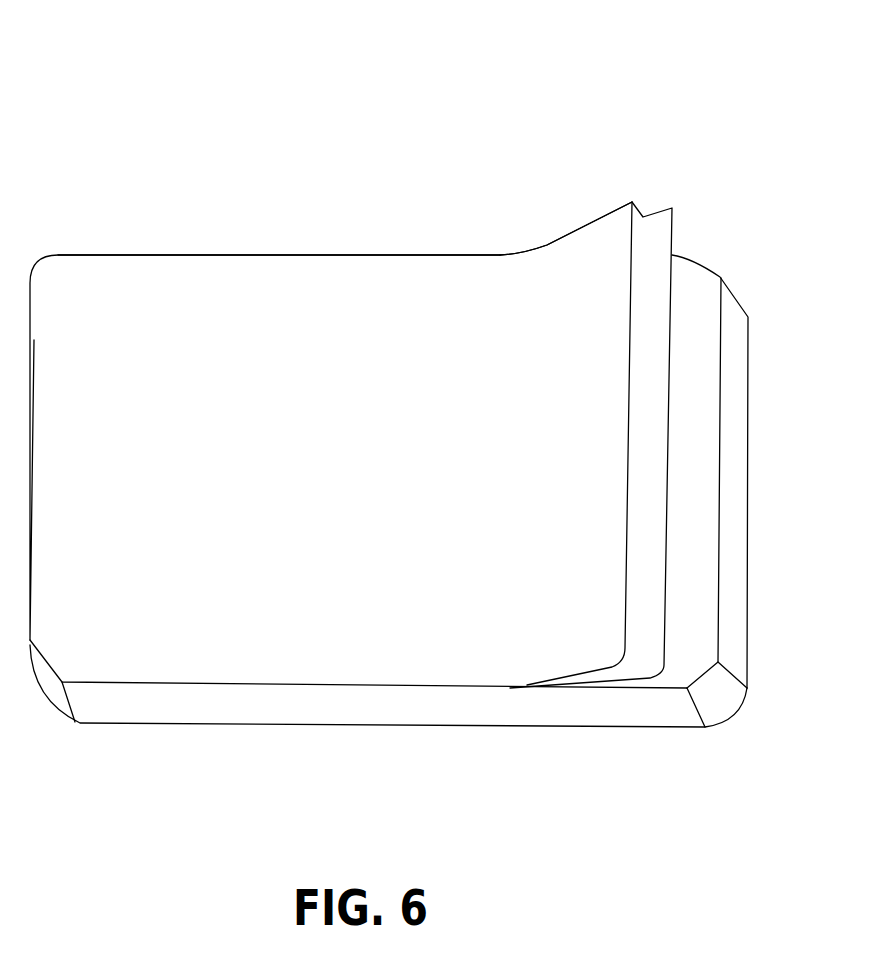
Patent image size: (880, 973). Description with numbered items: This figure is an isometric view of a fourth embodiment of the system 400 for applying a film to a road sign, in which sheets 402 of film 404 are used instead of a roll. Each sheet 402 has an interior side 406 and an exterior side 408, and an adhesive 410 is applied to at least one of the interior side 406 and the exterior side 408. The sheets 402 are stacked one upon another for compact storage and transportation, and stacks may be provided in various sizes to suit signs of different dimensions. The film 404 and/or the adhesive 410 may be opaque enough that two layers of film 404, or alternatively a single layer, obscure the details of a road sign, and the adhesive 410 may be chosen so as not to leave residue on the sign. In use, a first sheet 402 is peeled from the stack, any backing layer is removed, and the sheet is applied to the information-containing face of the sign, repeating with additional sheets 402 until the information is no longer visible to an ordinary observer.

The system 400 is at (102, 88).
The sheet 402 is at (130, 708).
The film 404 is at (552, 252).
The interior side 406 is at (640, 212).
The exterior side 408 is at (133, 270).
The adhesive 410 is at (663, 242).